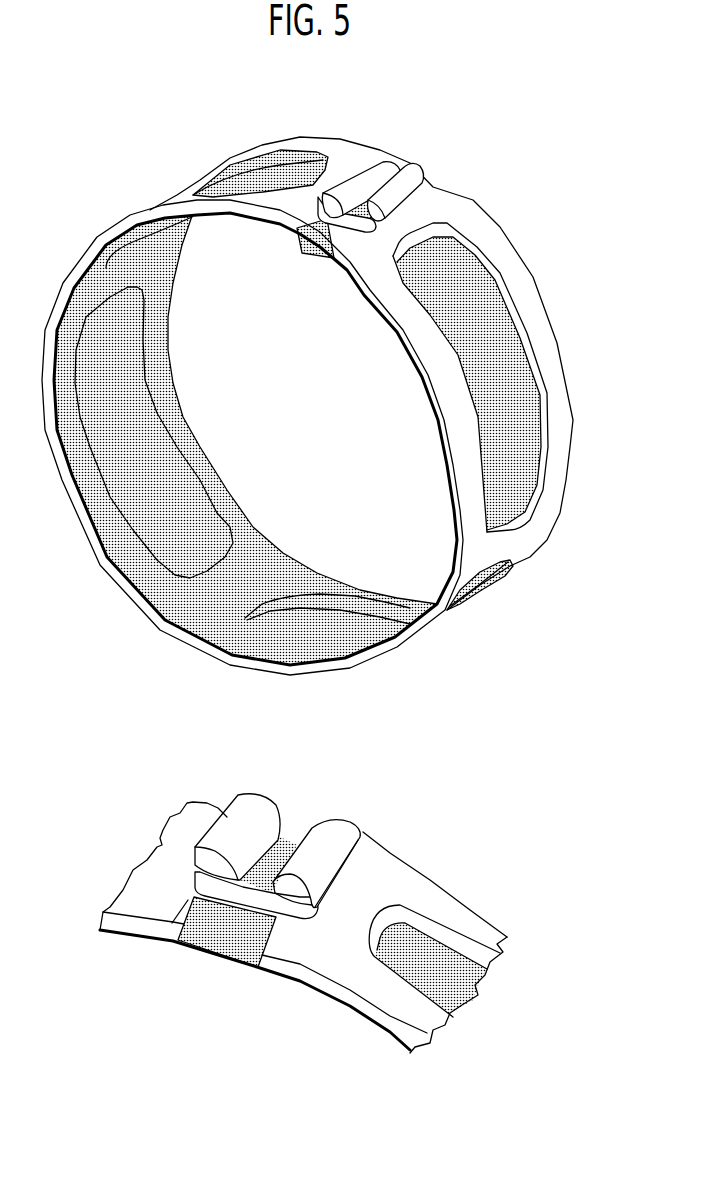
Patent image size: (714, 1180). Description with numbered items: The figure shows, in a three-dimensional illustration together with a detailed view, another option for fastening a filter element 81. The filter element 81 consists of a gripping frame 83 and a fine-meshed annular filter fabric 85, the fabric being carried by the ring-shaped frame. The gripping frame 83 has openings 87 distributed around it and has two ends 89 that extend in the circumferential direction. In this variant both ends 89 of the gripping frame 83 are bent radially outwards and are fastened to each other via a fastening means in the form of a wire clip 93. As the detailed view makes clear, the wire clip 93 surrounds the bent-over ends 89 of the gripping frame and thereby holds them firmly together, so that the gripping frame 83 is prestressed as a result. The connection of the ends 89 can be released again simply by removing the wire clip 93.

The filter element 81 is at (330, 498).
The gripping frame 83 is at (510, 543).
The fine-meshed annular filter fabric 85 is at (505, 357).
The openings 87 is at (473, 603).
The end 89 is at (380, 170).
The wire clip 93 is at (340, 217).